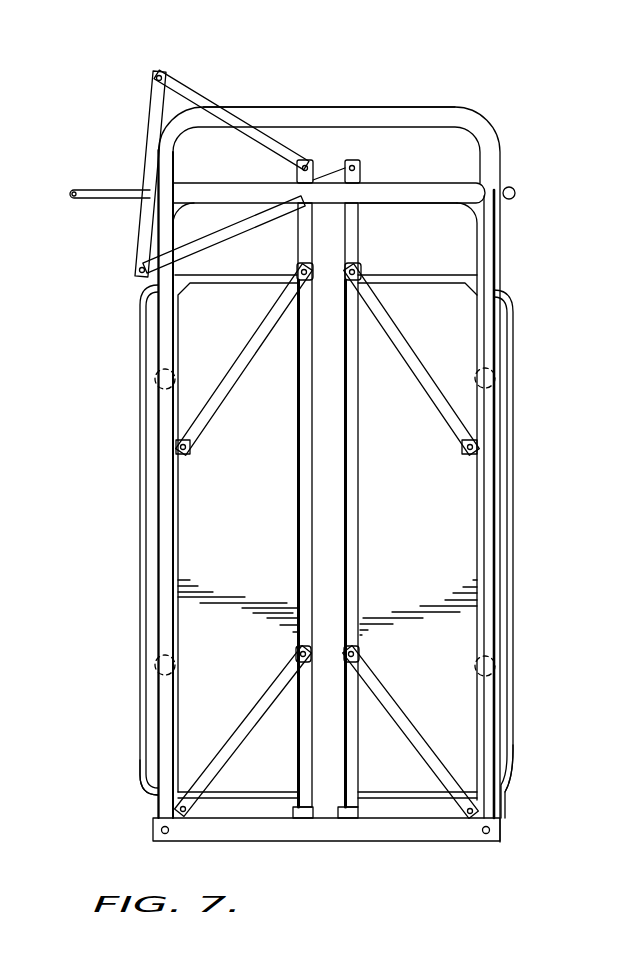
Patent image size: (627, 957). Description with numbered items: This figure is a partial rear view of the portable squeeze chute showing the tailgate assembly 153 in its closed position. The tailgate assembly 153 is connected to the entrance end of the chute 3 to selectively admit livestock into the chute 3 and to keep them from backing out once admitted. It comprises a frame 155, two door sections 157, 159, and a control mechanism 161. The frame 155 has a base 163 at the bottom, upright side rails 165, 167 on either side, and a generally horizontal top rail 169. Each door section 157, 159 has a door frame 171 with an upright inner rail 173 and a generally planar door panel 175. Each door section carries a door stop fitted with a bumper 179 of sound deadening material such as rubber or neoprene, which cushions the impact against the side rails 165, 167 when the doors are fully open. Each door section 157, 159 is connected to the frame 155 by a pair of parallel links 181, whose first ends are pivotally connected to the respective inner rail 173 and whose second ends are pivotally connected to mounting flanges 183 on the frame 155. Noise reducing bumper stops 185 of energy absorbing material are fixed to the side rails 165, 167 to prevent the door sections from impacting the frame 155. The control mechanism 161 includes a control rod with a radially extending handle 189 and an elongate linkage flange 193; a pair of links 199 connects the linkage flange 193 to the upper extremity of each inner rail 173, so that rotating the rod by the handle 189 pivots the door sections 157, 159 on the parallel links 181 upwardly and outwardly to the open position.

The chute 3 is at (379, 107).
The tailgate assembly 153 is at (512, 114).
The frame 155 is at (505, 237).
The door section 157 is at (140, 776).
The door section 159 is at (514, 778).
The control mechanism 161 is at (134, 168).
The base 163 is at (470, 845).
The upright side rail 165 is at (178, 498).
The upright side rail 167 is at (472, 490).
The top rail 169 is at (396, 208).
The door frame 171 is at (506, 303).
The upright inner rail 173 is at (318, 152).
The door panel 175 is at (252, 552).
The bumper 179 is at (310, 820).
The parallel link 181 is at (252, 368).
The mounting flange 183 is at (192, 452).
The bumper stop 185 is at (495, 378).
The handle 189 is at (98, 199).
The elongate linkage flange 193 is at (150, 112).
The link 199 is at (202, 92).